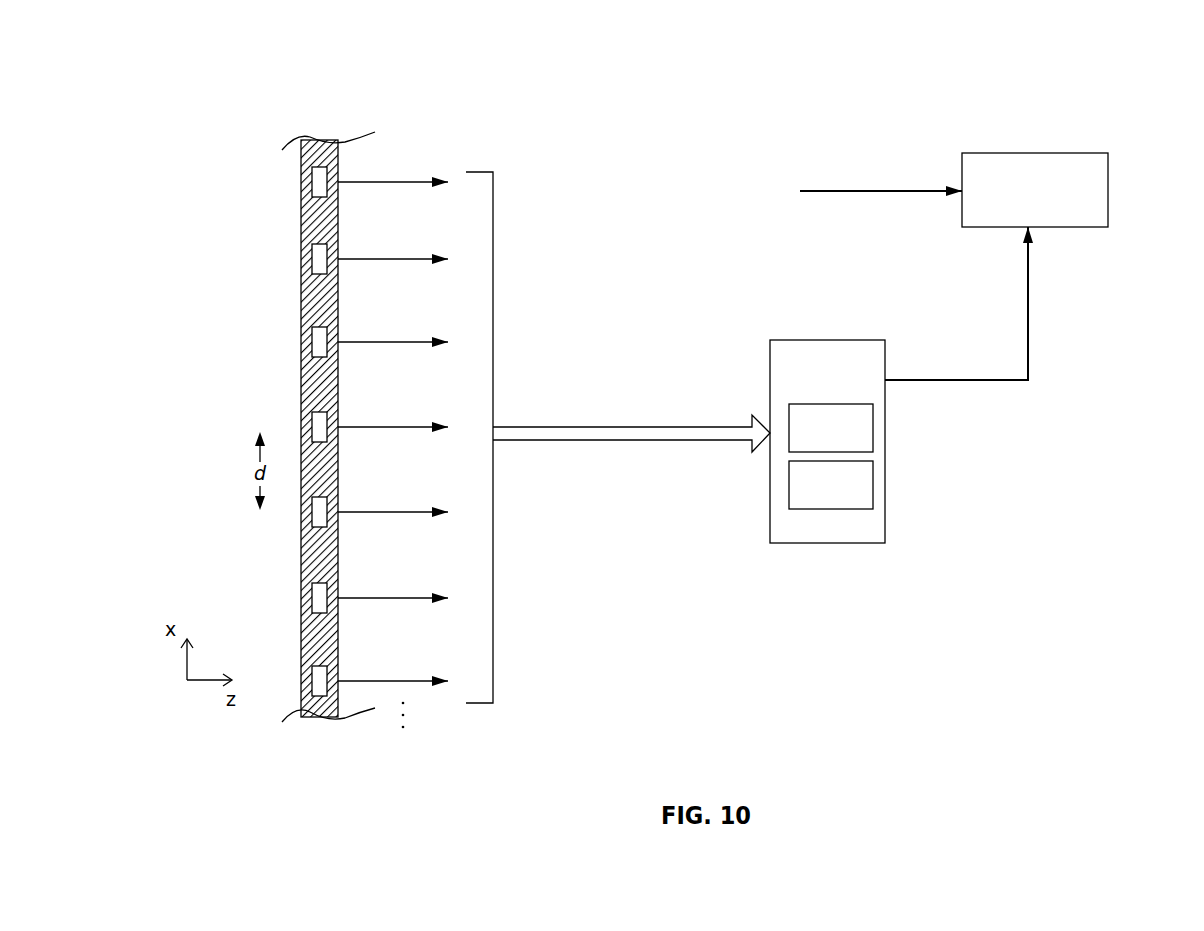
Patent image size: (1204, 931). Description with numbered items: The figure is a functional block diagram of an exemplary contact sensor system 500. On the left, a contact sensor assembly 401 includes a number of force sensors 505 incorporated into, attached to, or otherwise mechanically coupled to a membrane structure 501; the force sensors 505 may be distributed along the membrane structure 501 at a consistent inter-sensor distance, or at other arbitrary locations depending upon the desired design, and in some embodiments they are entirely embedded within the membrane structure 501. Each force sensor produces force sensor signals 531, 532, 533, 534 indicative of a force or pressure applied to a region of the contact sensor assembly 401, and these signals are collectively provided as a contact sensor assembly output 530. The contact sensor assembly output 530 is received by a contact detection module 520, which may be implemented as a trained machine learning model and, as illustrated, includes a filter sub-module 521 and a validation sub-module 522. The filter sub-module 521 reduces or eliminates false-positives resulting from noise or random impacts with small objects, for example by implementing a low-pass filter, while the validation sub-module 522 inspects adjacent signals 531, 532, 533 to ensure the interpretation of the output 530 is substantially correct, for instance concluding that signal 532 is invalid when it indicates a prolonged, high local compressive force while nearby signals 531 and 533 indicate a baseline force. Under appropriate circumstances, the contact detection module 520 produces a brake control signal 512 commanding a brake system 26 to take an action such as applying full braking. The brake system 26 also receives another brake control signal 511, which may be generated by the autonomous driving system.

The contact sensor system 500 is at (1090, 55).
The contact sensor assembly 401 is at (300, 133).
The membrane structure 501 is at (297, 301).
The force sensors 505 is at (310, 258).
The force sensor signal 531 is at (373, 178).
The force sensor signal 532 is at (373, 255).
The force sensor signal 533 is at (373, 340).
The force sensor signal 534 is at (373, 425).
The contact sensor assembly output 530 is at (633, 426).
The contact detection module 520 is at (827, 441).
The filter sub-module 521 is at (831, 428).
The validation sub-module 522 is at (831, 485).
The brake control signal 511 is at (840, 190).
The brake control signal 512 is at (1028, 362).
The brake system 26 is at (1035, 190).